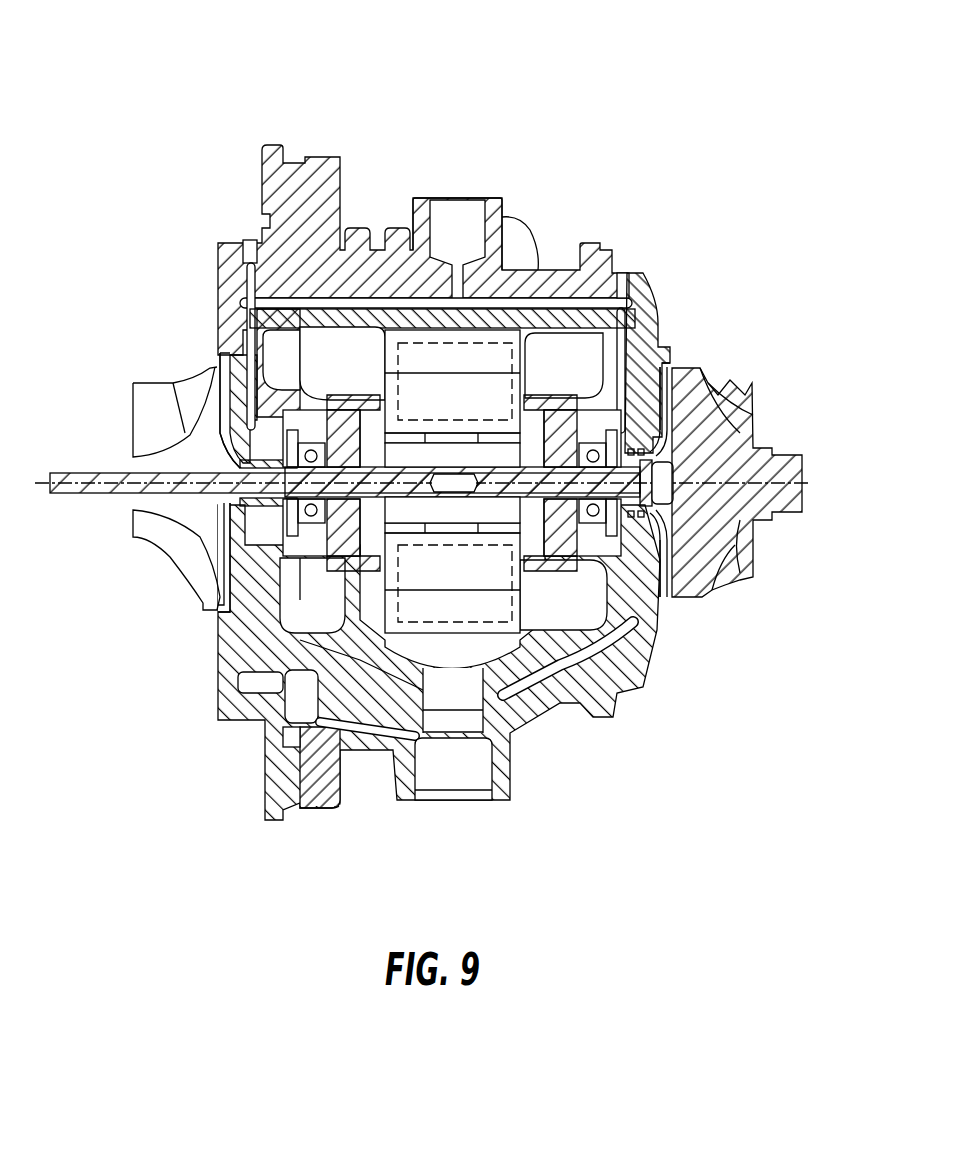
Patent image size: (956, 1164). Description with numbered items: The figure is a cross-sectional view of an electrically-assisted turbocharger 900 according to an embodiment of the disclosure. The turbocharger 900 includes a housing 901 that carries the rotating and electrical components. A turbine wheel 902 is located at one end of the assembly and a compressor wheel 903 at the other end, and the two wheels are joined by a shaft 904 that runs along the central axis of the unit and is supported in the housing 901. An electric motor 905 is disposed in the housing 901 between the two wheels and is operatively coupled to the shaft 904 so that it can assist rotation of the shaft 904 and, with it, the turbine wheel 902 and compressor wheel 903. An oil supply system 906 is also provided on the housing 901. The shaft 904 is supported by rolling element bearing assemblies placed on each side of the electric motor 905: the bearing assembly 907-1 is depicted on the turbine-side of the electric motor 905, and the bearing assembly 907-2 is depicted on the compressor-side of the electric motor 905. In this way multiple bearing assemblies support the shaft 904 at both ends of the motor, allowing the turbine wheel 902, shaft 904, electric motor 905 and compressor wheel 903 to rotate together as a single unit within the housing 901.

The electrically-assisted turbocharger 900 is at (172, 85).
The housing 901 is at (651, 330).
The turbine wheel 902 is at (153, 422).
The compressor wheel 903 is at (722, 432).
The shaft 904 is at (345, 482).
The electric motor 905 is at (468, 398).
The oil supply system 906 is at (472, 220).
The rolling element bearing assembly 907-1 is at (262, 550).
The rolling element bearing assembly 907-2 is at (663, 565).